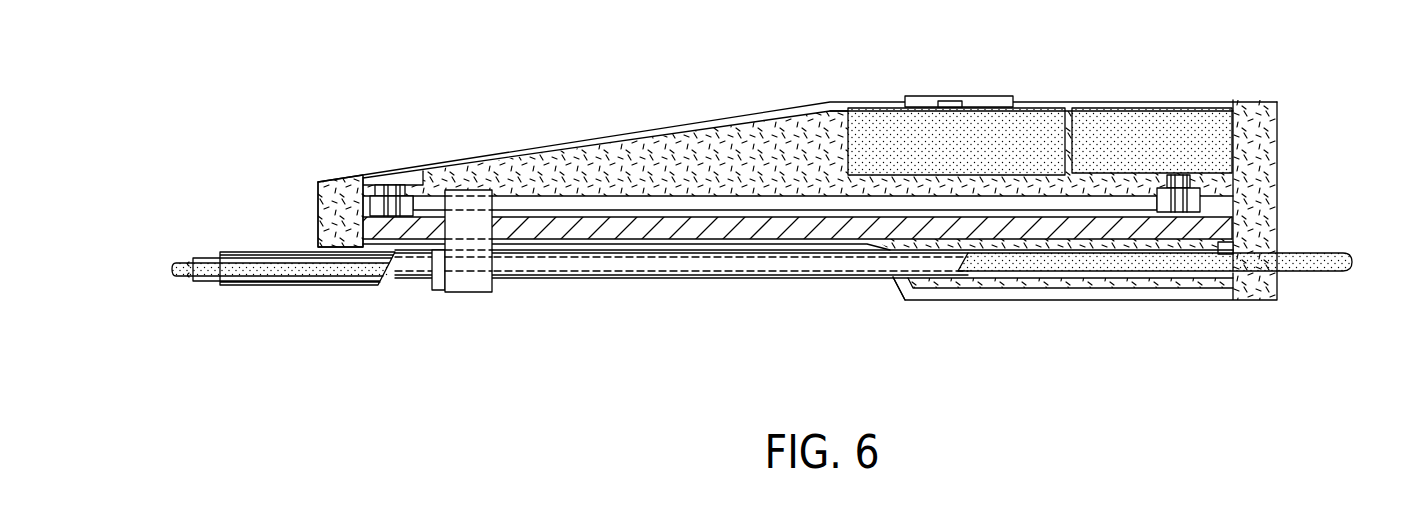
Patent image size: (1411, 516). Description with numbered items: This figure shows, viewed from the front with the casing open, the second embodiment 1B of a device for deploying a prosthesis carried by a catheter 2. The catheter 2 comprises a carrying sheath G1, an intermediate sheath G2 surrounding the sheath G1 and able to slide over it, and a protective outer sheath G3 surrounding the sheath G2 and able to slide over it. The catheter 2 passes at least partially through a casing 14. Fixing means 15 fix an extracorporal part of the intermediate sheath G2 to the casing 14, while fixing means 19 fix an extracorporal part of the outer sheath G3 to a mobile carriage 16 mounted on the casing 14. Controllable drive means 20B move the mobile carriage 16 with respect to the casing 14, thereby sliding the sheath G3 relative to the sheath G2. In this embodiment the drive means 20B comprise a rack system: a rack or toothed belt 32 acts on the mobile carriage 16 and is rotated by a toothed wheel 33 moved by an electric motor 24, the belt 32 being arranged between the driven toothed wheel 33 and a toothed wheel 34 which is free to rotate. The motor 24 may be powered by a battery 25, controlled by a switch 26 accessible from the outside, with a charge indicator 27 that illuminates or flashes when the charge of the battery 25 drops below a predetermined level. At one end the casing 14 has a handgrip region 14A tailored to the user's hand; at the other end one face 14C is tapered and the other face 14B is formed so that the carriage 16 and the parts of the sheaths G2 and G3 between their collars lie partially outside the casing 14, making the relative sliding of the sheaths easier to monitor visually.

The catheter 2 is at (775, 259).
The casing 14 is at (829, 228).
The handgrip region 14A is at (988, 313).
The face of the casing 14B is at (760, 286).
The tapered face of the casing 14C is at (640, 123).
The second embodiment of the device 1B is at (546, 136).
The fixing means 15 is at (1222, 290).
The mobile carriage 16 is at (472, 293).
The fixing means 19 is at (436, 294).
The drive means 20B is at (1110, 98).
The electric motor 24 is at (1152, 110).
The battery 25 is at (1030, 110).
The switch 26 is at (985, 97).
The charge indicator 27 is at (952, 97).
The rack or toothed belt 32 is at (605, 195).
The toothed wheel 33 is at (1192, 181).
The toothed wheel 34 is at (376, 188).
The carrying sheath G1 is at (1345, 273).
The intermediate sheath G2 is at (1058, 278).
The protective outer sheath G3 is at (275, 286).